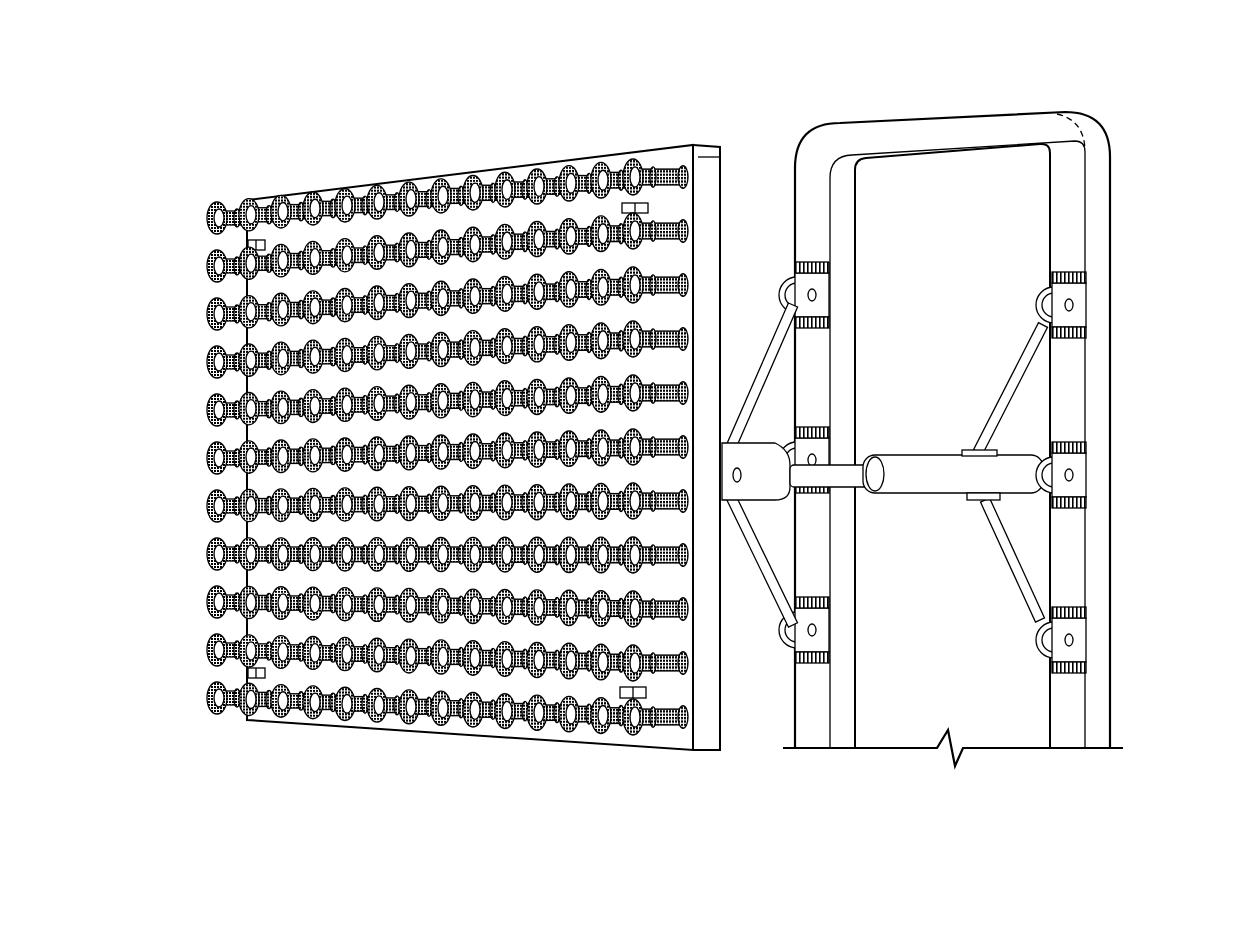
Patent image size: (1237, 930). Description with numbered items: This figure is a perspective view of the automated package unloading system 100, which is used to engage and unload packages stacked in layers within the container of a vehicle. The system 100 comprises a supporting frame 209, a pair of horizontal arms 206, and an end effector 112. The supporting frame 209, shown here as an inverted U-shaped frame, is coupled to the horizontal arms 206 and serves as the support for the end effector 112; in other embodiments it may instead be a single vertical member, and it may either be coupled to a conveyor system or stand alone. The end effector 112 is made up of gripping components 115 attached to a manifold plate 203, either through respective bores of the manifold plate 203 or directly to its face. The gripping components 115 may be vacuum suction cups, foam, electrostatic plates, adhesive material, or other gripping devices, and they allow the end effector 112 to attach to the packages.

The automated package unloading system 100 is at (333, 75).
The end effector 112 is at (400, 768).
The gripping components 115 is at (197, 212).
The manifold plate 203 is at (728, 155).
The horizontal arms 206 is at (903, 473).
The supporting frame 209 is at (1076, 239).